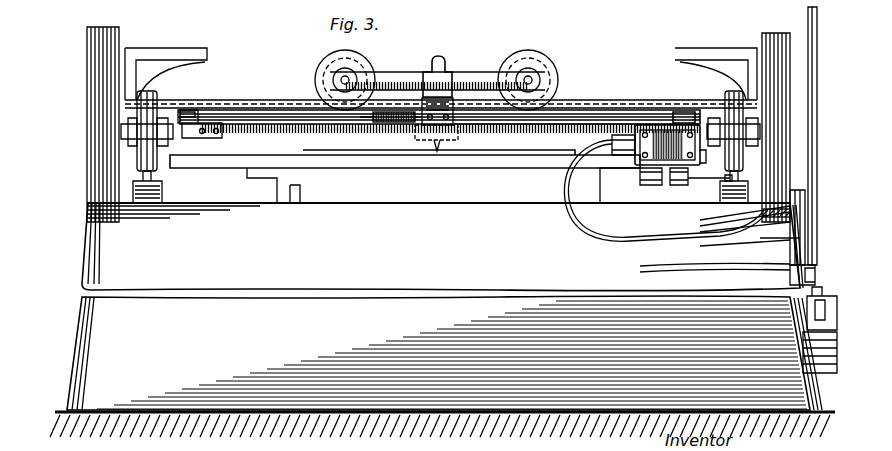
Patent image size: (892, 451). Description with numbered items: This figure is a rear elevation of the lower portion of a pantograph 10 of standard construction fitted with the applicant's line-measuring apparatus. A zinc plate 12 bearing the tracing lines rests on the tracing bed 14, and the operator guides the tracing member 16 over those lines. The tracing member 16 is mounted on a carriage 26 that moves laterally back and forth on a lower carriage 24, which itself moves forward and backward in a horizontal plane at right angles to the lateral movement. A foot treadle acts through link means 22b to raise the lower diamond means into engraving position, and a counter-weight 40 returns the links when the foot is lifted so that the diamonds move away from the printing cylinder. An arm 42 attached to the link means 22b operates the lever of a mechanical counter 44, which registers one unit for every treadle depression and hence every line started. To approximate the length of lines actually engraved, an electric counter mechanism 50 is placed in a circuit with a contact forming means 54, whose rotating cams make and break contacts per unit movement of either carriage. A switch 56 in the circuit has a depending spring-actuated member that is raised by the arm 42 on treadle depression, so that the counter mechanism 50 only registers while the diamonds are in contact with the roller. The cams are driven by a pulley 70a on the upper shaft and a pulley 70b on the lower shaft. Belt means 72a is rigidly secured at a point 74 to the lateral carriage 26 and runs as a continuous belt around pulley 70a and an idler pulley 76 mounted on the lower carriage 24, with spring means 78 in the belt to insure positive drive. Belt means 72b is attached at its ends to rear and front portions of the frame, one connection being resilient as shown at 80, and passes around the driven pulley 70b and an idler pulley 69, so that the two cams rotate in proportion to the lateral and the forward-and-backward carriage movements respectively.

The pantograph 10 is at (442, 247).
The zinc plate 12 is at (408, 153).
The tracing bed 14 is at (398, 165).
The tracing member 16 is at (440, 144).
The link means 22b is at (783, 132).
The carriage 24 is at (290, 128).
The carriage 26 is at (470, 88).
The counter-weight 40 is at (805, 342).
The arm 42 is at (700, 263).
The mechanical counter 44 is at (782, 237).
The counter mechanism 50 is at (745, 232).
The contact forming means 54 is at (650, 130).
The switch 56 is at (760, 249).
The idler pulley 69 is at (625, 205).
The pulley 70a is at (680, 112).
The pulley 70b is at (680, 186).
The belt means 72a is at (288, 118).
The belt means 72b is at (652, 186).
The point of belt 74 is at (462, 122).
The idler pulley 76 is at (190, 110).
The spring means 78 is at (385, 124).
The resilient connection 80 is at (697, 177).